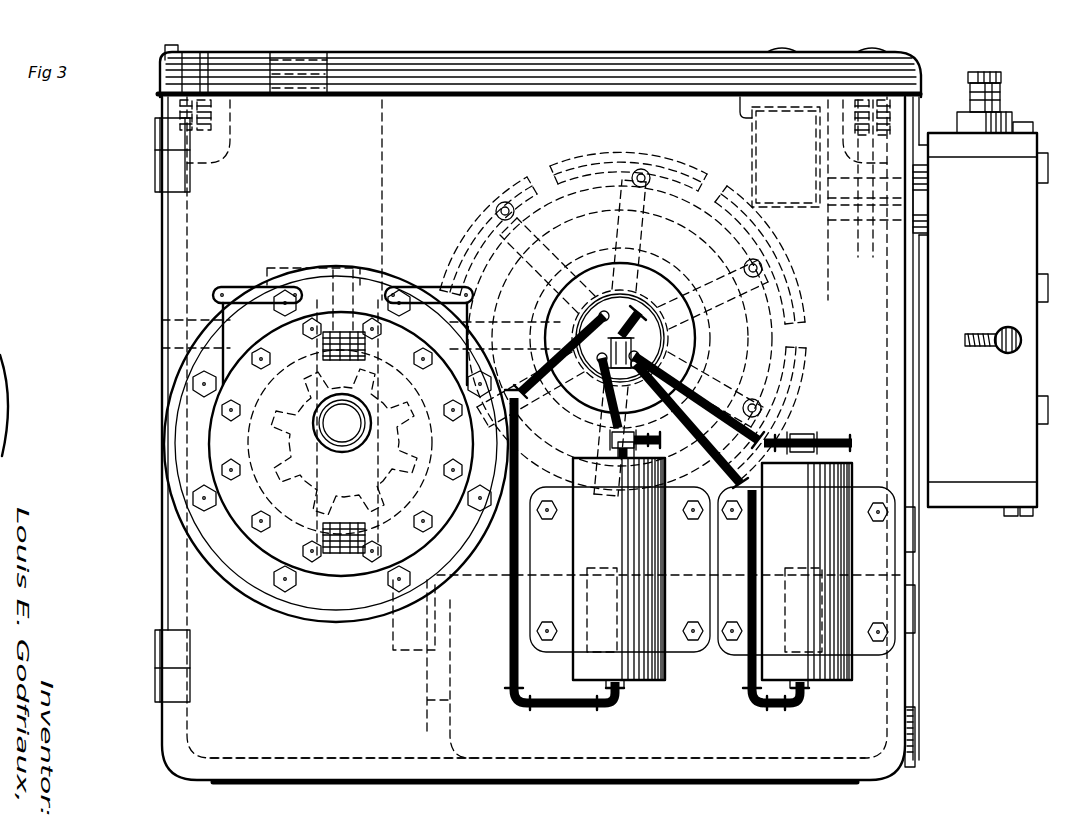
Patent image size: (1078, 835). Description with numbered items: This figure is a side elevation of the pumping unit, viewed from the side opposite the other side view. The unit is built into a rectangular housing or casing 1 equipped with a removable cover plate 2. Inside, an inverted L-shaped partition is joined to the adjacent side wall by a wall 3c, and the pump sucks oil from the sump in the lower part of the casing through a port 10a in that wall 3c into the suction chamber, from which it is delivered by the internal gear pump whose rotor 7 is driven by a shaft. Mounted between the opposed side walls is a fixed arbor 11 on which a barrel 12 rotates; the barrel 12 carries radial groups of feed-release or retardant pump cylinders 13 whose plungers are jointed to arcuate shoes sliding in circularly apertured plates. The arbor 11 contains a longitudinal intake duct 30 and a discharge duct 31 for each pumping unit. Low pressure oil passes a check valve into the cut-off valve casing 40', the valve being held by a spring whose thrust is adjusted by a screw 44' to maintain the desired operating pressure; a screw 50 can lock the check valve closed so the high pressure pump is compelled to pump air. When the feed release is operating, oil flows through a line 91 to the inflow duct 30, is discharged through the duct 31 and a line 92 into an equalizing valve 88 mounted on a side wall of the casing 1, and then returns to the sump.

The casing 1 is at (537, 439).
The removable cover plate 2 is at (563, 58).
The wall 3c is at (452, 633).
The rotor 7 is at (340, 430).
The port 10a is at (420, 748).
The fixed arbor 11 is at (641, 304).
The barrel 12 is at (603, 178).
The feed-release pump cylinders 13 is at (600, 282).
The intake duct 30 is at (655, 340).
The discharge duct 31 is at (598, 318).
The cut-off valve casing 40' is at (980, 324).
The adjusting screw 44' is at (993, 86).
The locking screw 50 is at (1008, 328).
The equalizing valve 88 is at (712, 565).
The feed release oil line 91 is at (610, 428).
The discharge line 92 is at (510, 565).